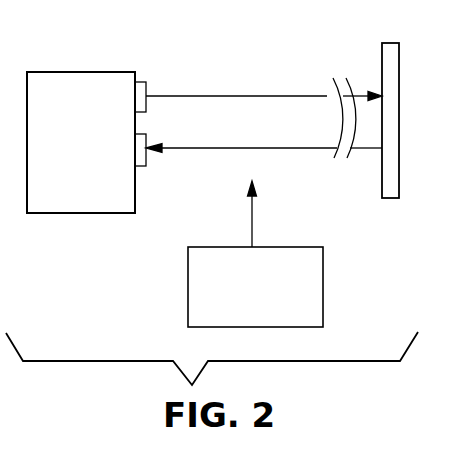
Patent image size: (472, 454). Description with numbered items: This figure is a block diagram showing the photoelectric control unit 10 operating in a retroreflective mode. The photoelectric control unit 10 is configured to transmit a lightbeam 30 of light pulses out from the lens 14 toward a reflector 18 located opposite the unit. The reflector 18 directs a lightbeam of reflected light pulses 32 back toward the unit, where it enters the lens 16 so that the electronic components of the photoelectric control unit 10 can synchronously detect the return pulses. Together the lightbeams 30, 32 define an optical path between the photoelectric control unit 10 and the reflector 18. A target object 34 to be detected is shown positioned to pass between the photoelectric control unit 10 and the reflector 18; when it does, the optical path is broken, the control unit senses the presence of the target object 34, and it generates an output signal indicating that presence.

The photoelectric control unit 10 is at (63, 152).
The lens 14 is at (148, 80).
The lens 16 is at (146, 160).
The reflector 18 is at (392, 200).
The lightbeam 30 is at (243, 96).
The lightbeam of reflected light pulses 32 is at (283, 150).
The target object 34 is at (240, 296).